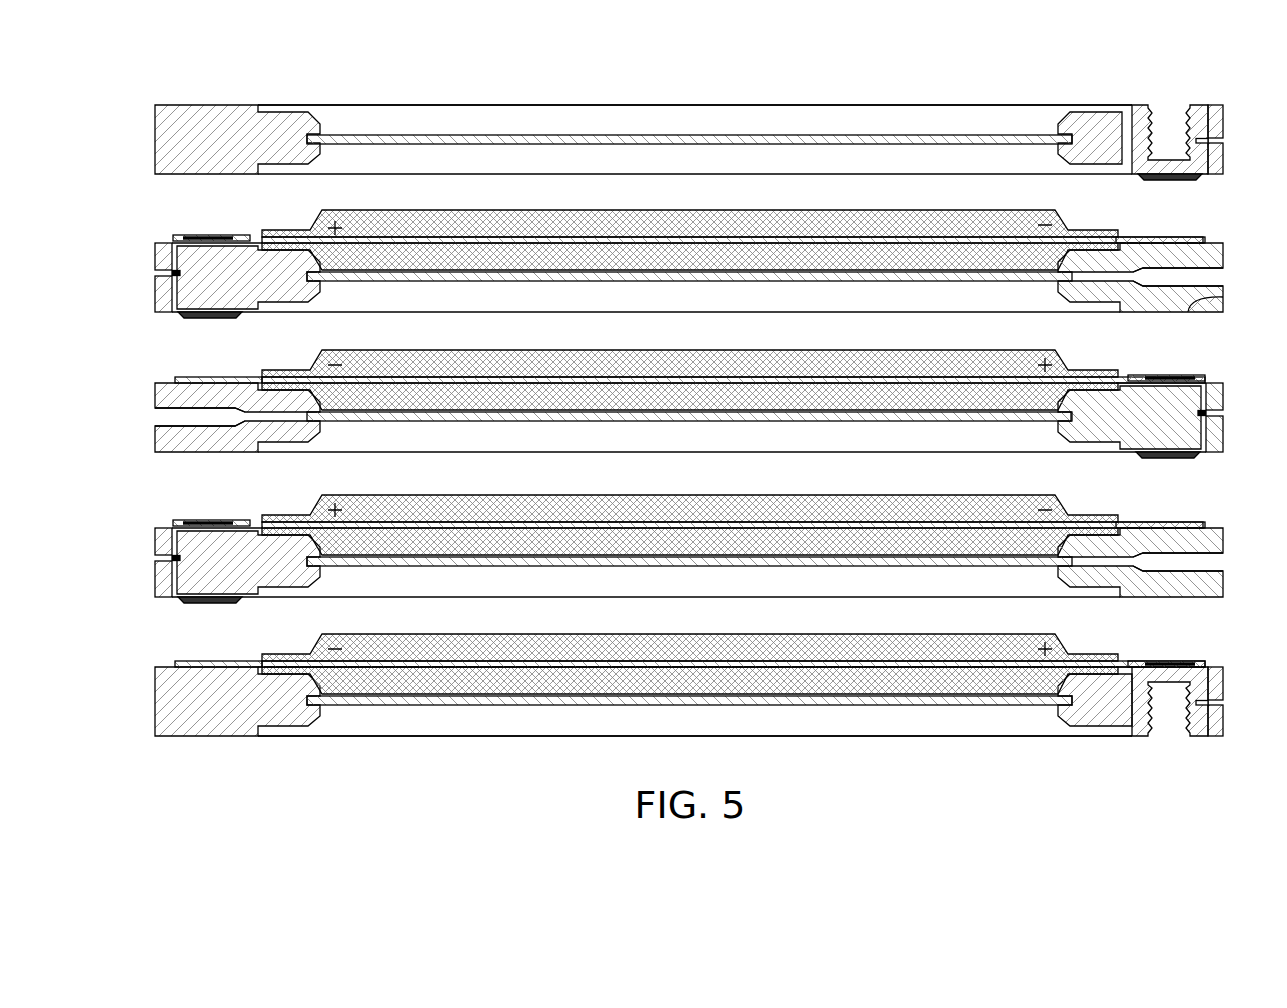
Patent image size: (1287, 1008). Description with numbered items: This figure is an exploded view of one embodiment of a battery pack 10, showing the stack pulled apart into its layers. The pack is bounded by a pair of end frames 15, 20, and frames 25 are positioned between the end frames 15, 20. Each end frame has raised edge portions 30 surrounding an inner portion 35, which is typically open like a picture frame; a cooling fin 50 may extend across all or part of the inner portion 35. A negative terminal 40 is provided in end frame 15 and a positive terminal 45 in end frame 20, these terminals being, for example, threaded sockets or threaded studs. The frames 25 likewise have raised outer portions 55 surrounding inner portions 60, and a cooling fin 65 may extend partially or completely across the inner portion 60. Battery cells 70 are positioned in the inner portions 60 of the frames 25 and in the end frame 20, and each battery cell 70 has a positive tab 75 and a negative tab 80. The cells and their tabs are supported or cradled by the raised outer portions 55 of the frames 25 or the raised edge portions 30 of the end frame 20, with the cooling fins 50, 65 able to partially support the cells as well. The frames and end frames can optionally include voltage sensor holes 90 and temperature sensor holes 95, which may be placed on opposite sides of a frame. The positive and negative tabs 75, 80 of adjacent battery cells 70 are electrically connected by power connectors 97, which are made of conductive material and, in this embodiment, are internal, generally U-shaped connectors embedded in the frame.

The battery pack 10 is at (295, 69).
The end frame 15 is at (157, 127).
The end frame 20 is at (158, 705).
The frame 25 is at (232, 260).
The raised edge portion 30 is at (215, 105).
The inner portion 35 is at (670, 118).
The negative terminal 40 is at (1168, 110).
The positive terminal 45 is at (1168, 736).
The cooling fin 50 is at (560, 136).
The raised outer portion 55 is at (160, 305).
The inner portion 60 is at (674, 302).
The cooling fin 65 is at (782, 273).
The battery cell 70 is at (945, 216).
The positive tab 75 is at (210, 236).
The negative tab 80 is at (1170, 237).
The voltage sensor hole 90 is at (1225, 140).
The temperature sensor hole 95 is at (1225, 276).
The power connector 97 is at (160, 285).